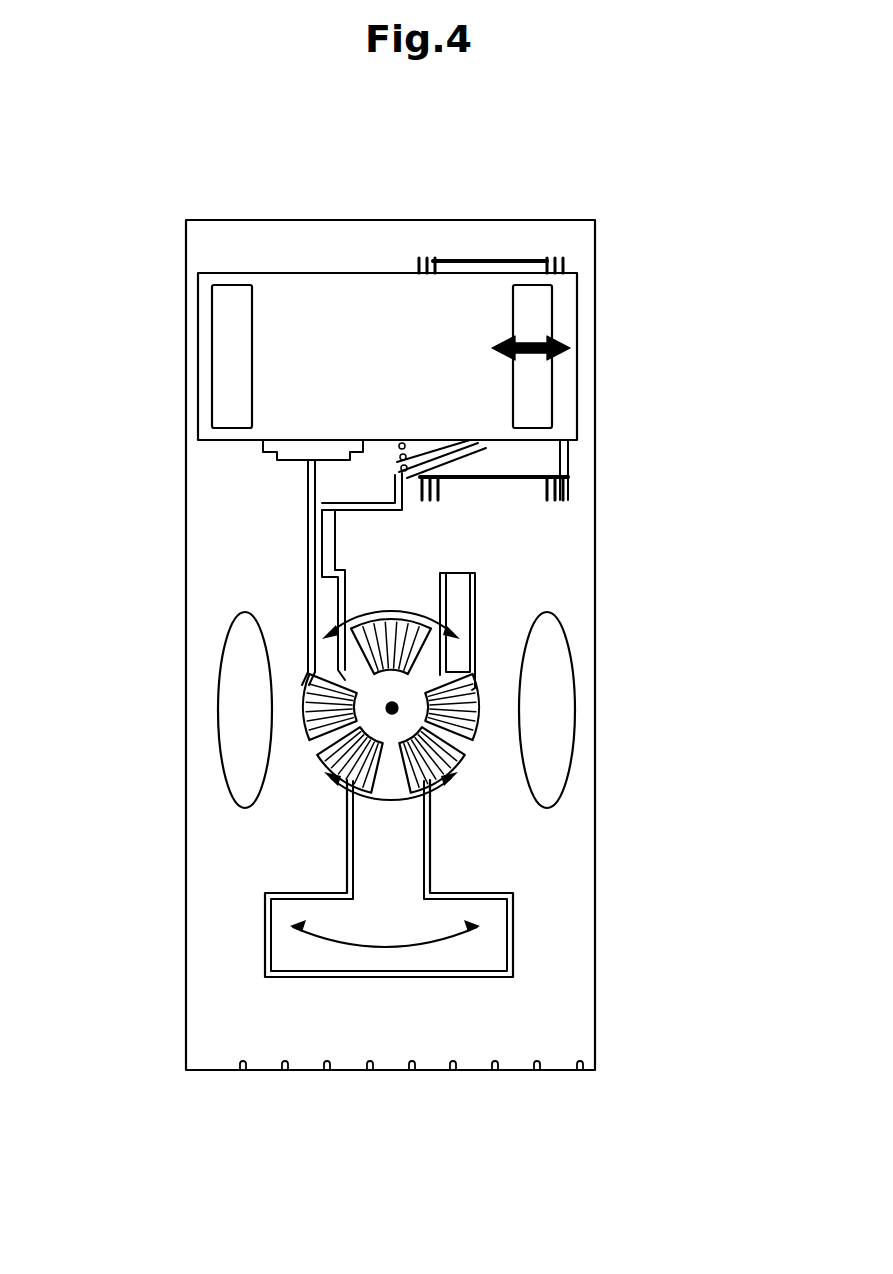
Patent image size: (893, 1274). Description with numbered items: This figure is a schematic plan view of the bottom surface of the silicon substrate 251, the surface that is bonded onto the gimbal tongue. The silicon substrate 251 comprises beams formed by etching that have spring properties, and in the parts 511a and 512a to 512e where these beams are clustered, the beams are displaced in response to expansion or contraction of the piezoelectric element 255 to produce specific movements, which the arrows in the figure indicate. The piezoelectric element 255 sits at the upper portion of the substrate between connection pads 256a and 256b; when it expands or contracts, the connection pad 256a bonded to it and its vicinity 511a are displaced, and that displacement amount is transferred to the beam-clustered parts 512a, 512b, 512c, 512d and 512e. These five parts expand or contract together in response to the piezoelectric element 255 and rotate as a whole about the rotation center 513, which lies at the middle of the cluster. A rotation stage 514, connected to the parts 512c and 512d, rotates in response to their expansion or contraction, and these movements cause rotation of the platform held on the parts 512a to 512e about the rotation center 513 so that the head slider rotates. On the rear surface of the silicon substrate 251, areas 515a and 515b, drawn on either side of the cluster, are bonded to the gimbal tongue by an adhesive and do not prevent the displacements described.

The silicon substrate 251 is at (185, 557).
The piezoelectric element 255 is at (338, 242).
The connection pad 256a is at (527, 310).
The connection pad 256b is at (228, 347).
The beam-clustered part 511a is at (540, 457).
The beam-clustered part 512a is at (400, 627).
The beam-clustered part 512b is at (480, 695).
The beam-clustered part 512c is at (457, 767).
The beam-clustered part 512d is at (333, 787).
The beam-clustered part 512e is at (303, 697).
The rotation center 513 is at (395, 705).
The rotation stage 514 is at (437, 935).
The bonded area 515a is at (542, 777).
The bonded area 515b is at (250, 768).